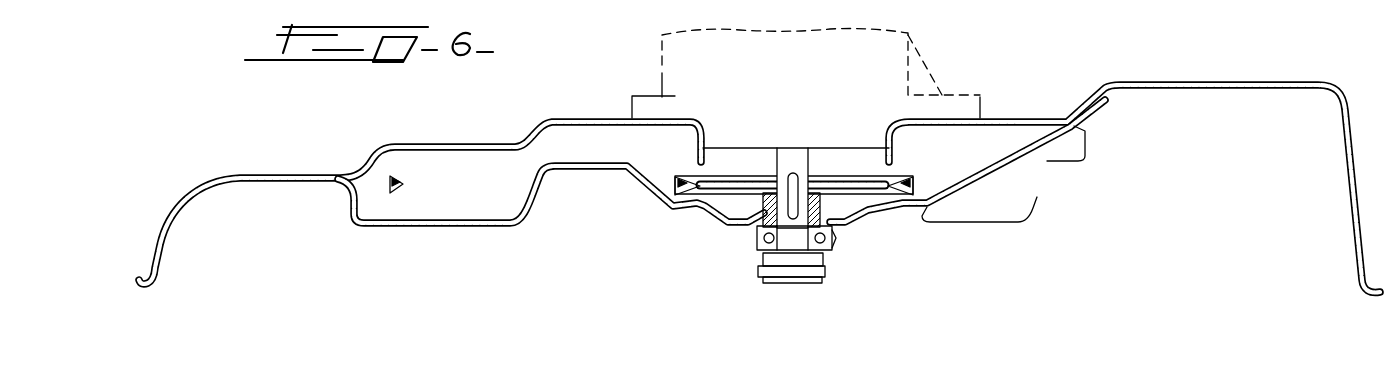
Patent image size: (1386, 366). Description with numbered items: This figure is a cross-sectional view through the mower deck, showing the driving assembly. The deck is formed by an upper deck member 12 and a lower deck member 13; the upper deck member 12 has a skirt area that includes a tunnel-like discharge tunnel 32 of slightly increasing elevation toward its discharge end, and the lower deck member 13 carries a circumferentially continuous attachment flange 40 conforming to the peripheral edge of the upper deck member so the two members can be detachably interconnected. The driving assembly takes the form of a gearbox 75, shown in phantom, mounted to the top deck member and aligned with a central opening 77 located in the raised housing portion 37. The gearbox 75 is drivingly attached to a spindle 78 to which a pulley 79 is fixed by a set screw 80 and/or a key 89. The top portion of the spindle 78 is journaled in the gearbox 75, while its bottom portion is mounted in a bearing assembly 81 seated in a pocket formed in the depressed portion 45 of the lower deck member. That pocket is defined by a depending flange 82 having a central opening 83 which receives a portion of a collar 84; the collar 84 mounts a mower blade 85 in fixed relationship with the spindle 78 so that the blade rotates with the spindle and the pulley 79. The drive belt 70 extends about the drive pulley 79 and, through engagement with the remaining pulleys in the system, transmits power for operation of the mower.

The upper deck member 12 is at (1010, 104).
The lower deck member 13 is at (1012, 188).
The discharge tunnel 32 is at (1236, 82).
The raised housing portion 37 is at (995, 119).
The attachment flange 40 is at (318, 183).
The depressed portion 45 is at (832, 226).
The drive belt 70 is at (405, 181).
The gearbox 75 is at (661, 65).
The central opening 77 is at (886, 158).
The spindle 78 is at (787, 165).
The pulley 79 is at (722, 176).
The set screw 80 is at (718, 222).
The bearing assembly 81 is at (833, 239).
The depending flange 82 is at (760, 247).
The opening 83 is at (787, 255).
The collar 84 is at (823, 262).
The mower blade 85 is at (798, 270).
The key 89 is at (800, 210).